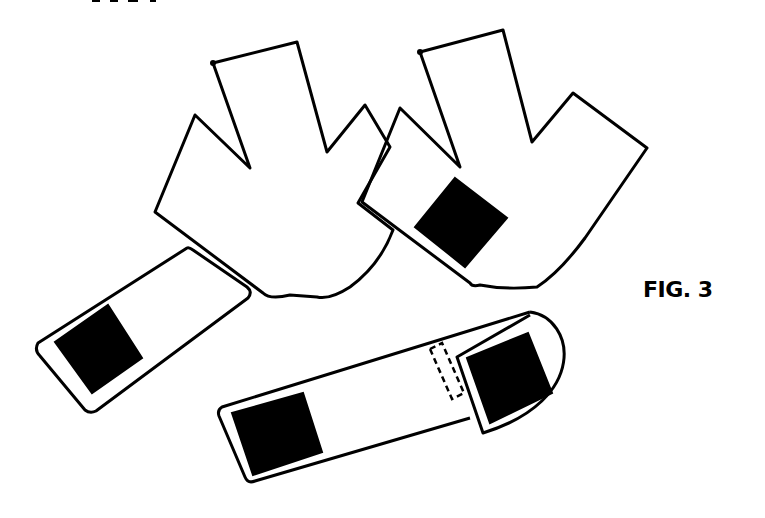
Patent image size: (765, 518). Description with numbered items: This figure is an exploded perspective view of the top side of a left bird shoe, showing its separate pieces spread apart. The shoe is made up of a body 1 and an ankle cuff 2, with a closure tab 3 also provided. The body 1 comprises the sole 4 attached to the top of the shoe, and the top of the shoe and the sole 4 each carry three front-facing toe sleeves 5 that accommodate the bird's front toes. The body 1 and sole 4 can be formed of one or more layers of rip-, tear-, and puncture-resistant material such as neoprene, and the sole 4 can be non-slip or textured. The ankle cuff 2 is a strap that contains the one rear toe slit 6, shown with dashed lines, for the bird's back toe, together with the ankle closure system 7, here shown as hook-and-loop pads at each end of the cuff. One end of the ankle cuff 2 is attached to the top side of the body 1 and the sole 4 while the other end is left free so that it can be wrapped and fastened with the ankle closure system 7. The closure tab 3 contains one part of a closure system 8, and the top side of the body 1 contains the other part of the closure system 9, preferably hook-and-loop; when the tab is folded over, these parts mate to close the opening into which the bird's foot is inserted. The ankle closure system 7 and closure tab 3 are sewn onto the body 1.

The body 1 is at (548, 209).
The ankle cuff 2 is at (408, 397).
The closure tab 3 is at (179, 330).
The sole 4 is at (311, 217).
The toe sleeves 5 is at (266, 68).
The toe slit 6 is at (437, 371).
The ankle closure system 7 is at (392, 404).
The closure system part on closure tab 8 is at (98, 349).
The closure system part on body 9 is at (461, 222).